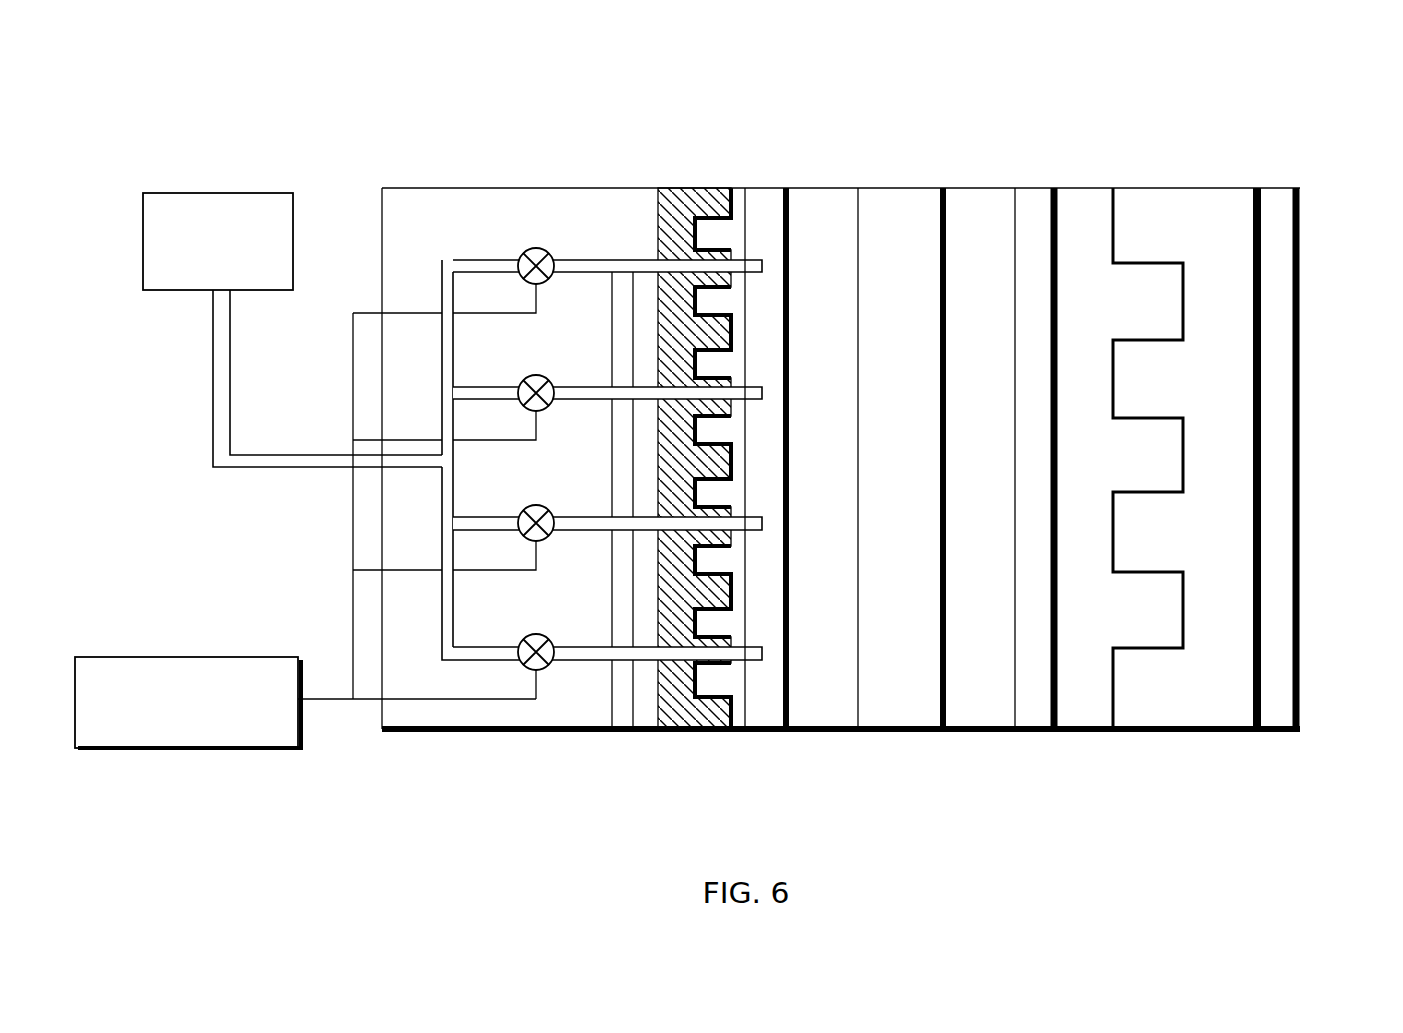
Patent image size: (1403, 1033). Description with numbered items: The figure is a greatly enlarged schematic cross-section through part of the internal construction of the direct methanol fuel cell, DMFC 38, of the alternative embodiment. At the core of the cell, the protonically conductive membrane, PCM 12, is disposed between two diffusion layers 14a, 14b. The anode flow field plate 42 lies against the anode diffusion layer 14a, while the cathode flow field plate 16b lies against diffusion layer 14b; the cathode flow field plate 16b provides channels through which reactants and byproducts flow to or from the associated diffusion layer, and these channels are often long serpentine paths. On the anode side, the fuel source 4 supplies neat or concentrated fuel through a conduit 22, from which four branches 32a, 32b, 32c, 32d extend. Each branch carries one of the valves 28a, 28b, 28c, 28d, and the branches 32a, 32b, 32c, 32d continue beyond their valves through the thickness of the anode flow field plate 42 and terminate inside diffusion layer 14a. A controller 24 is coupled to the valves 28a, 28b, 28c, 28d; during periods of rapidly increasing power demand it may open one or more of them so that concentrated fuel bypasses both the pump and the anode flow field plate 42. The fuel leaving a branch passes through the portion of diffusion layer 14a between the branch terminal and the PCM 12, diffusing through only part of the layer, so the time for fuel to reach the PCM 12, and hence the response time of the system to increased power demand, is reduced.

The fuel source 4 is at (176, 193).
The conduit 22 is at (258, 469).
The controller 24 is at (176, 750).
The valve 28a is at (539, 250).
The valve 28b is at (540, 377).
The valve 28c is at (545, 506).
The valve 28d is at (541, 670).
The branch 32a is at (448, 262).
The branch 32b is at (515, 382).
The branch 32c is at (472, 516).
The branch 32d is at (478, 646).
The anode flow field plate 42 is at (703, 729).
The protonically conductive membrane 12 is at (900, 729).
The diffusion layer 14a is at (762, 187).
The diffusion layer 14b is at (1035, 187).
The cathode flow field plate 16b is at (1203, 720).
The DMFC 38 is at (1300, 222).